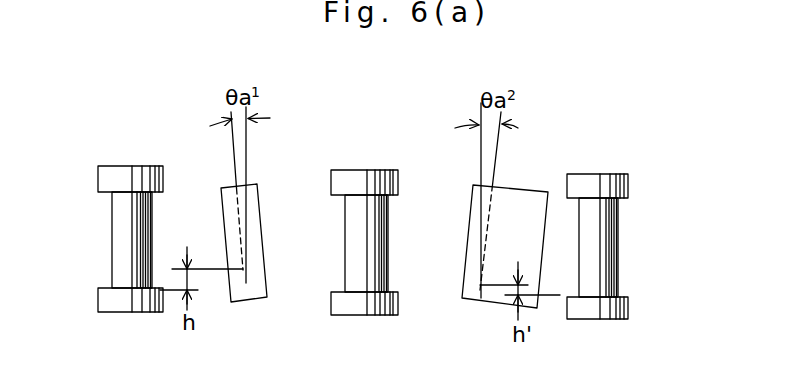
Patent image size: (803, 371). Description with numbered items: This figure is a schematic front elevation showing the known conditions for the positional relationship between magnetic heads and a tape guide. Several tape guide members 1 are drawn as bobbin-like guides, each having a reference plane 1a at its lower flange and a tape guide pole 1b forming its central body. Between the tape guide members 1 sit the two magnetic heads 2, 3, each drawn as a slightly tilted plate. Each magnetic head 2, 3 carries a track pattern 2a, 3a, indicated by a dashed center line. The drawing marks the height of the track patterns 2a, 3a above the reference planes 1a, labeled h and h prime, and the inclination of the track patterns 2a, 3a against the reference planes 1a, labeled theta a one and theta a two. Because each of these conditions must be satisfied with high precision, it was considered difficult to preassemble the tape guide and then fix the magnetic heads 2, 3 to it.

The tape guide member 1 is at (363, 242).
The reference plane 1a is at (110, 285).
The tape guide pole 1b is at (120, 223).
The magnetic head 2 is at (220, 210).
The track pattern 2a is at (240, 215).
The magnetic head 3 is at (525, 190).
The track pattern 3a is at (487, 212).